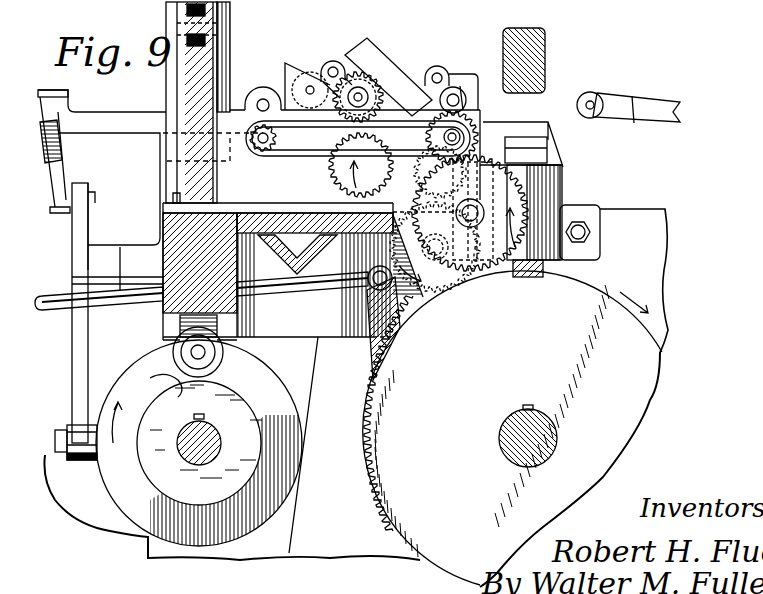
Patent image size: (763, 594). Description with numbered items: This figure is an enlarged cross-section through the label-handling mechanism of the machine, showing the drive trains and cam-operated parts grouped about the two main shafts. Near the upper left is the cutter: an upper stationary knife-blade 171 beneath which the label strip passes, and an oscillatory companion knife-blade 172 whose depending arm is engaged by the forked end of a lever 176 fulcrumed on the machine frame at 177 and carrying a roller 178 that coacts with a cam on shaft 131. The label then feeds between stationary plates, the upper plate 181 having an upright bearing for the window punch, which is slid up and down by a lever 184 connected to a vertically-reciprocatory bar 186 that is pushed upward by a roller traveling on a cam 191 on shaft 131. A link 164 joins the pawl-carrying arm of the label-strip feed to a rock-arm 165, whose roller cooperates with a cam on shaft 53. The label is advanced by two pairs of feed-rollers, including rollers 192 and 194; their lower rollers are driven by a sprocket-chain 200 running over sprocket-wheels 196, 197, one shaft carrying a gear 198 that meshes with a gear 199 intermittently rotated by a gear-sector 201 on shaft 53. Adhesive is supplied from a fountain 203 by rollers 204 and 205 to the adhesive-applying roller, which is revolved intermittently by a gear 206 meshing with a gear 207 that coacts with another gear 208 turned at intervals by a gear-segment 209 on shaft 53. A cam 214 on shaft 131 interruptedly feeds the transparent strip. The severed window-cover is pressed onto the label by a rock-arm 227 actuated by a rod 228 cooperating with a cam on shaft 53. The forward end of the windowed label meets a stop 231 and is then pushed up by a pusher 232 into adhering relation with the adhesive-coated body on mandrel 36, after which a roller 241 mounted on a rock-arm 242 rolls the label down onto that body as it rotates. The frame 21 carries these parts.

The frame 21 is at (620, 209).
The mandrel 36 is at (522, 40).
The shaft 53 is at (500, 437).
The shaft 131 is at (213, 417).
The link 164 is at (100, 308).
The rock-arm 165 is at (373, 318).
The stationary knife-blade 171 is at (50, 137).
The oscillatory knife-blade 172 is at (54, 164).
The lever 176 is at (85, 233).
The fulcrum 177 is at (139, 252).
The roller 178 is at (92, 460).
The plate 181 is at (121, 116).
The lever 184 is at (193, 12).
The vertically-reciprocatory bar 186 is at (183, 80).
The cam 191 is at (150, 378).
The feed-roller 192 is at (255, 89).
The feed-roller 194 is at (461, 76).
The sprocket-wheel 196 is at (270, 157).
The sprocket-wheel 197 is at (427, 167).
The gear 198 is at (480, 160).
The gear 199 is at (540, 200).
The sprocket-chain 200 is at (322, 157).
The gear-sector 201 is at (373, 493).
The fountain 203 is at (285, 67).
The roller 204 is at (318, 78).
The roller 205 is at (338, 64).
The gear 206 is at (380, 62).
The gear 207 is at (353, 180).
The gear 208 is at (393, 258).
The gear-segment 209 is at (363, 455).
The cam 214 is at (89, 508).
The rock-arm 227 is at (418, 78).
The rod 228 is at (462, 107).
The stop 231 is at (548, 130).
The pusher 232 is at (532, 143).
The roller 241 is at (600, 80).
The rock-arm 242 is at (648, 108).